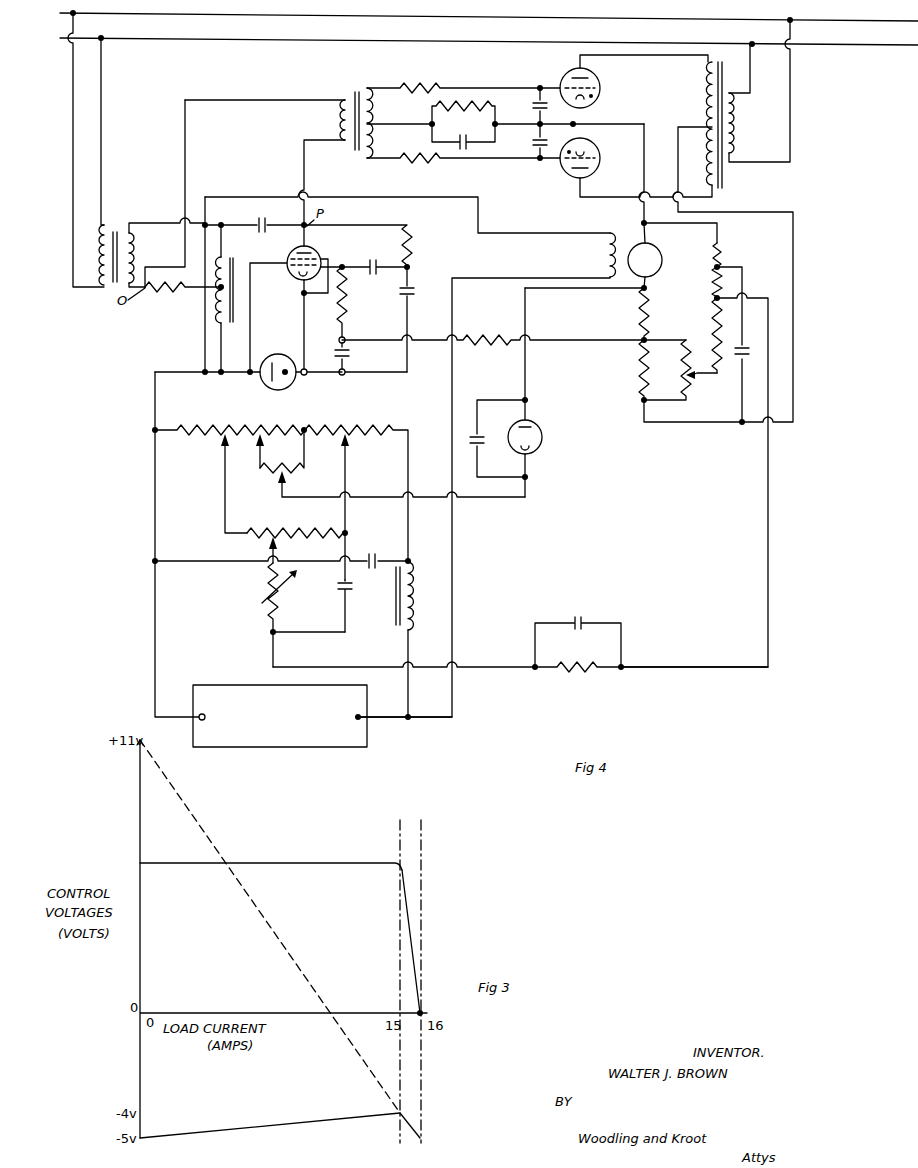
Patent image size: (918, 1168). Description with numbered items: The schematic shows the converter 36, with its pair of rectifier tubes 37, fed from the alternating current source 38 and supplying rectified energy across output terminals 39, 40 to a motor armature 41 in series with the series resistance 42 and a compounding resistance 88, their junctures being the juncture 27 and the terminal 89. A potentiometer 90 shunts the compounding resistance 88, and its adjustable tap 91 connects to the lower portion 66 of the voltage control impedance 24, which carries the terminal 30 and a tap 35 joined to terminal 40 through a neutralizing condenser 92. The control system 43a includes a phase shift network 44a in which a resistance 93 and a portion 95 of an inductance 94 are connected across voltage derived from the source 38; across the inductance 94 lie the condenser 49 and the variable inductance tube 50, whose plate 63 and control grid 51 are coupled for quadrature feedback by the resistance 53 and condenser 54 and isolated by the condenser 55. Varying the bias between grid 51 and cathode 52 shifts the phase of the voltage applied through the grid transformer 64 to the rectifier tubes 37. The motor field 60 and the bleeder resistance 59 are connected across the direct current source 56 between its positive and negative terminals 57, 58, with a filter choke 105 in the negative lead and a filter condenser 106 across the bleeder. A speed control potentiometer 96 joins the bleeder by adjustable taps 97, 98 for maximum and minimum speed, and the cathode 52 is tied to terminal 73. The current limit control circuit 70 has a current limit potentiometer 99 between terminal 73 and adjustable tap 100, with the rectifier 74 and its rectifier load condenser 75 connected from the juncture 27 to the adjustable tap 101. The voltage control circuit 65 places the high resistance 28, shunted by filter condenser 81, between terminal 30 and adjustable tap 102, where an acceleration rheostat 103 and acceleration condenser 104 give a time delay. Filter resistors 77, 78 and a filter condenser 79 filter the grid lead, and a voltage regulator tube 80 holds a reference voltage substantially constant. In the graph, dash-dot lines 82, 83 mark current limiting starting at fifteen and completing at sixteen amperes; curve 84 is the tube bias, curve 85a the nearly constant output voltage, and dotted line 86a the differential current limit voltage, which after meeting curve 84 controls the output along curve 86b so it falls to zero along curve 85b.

In FIG. 4, the alternating current source 38 is at (153, 15).
In FIG. 4, the grid transformer 64 is at (345, 96).
In FIG. 4, the converter 36 is at (663, 93).
In FIG. 4, the rectifier tubes 37 is at (587, 102).
In FIG. 4, the inductance 94 is at (200, 321).
In FIG. 4, the resistance 93 is at (172, 291).
In FIG. 4, the portion of inductance 95 is at (218, 274).
In FIG. 4, the condenser 49 is at (259, 223).
In FIG. 4, the phase shift network 44a is at (286, 298).
In FIG. 4, the plate 63 is at (309, 252).
In FIG. 4, the control grid 51 is at (291, 270).
In FIG. 4, the cathode 52 is at (299, 281).
In FIG. 4, the variable inductance tube 50 is at (321, 263).
In FIG. 4, the condenser 55 is at (382, 261).
In FIG. 4, the resistance 53 is at (412, 251).
In FIG. 4, the condenser 54 is at (412, 295).
In FIG. 4, the second filter resistor 78 is at (347, 300).
In FIG. 4, the filter condenser 79 is at (350, 353).
In FIG. 4, the first filter resistor 77 is at (487, 337).
In FIG. 4, the voltage regulator tube 80 is at (280, 351).
In FIG. 4, the motor field 60 is at (605, 258).
In FIG. 4, the output terminal 39 is at (643, 222).
In FIG. 4, the motor armature 41 is at (662, 259).
In FIG. 4, the juncture 27 is at (650, 289).
In FIG. 4, the series resistance 42 is at (640, 318).
In FIG. 4, the terminal 89 is at (651, 340).
In FIG. 4, the compounding resistance 88 is at (640, 378).
In FIG. 4, the potentiometer 90 is at (684, 385).
In FIG. 4, the adjustable tap 91 is at (700, 376).
In FIG. 4, the output terminal 40 is at (740, 426).
In FIG. 4, the voltage control impedance 24 is at (721, 257).
In FIG. 4, the tap 35 is at (715, 267).
In FIG. 4, the terminal 30 is at (721, 283).
In FIG. 4, the lower portion of voltage control impedance 66 is at (714, 326).
In FIG. 4, the neutralizing condenser 92 is at (746, 348).
In FIG. 4, the positive terminal 57 is at (151, 432).
In FIG. 4, the control system 43a is at (383, 413).
In FIG. 4, the bleeder resistance 59 is at (252, 428).
In FIG. 4, the terminal 73 is at (307, 427).
In FIG. 4, the adjustable tap 97 is at (221, 448).
In FIG. 4, the speed control potentiometer 96 is at (275, 528).
In FIG. 4, the adjustable tap 98 is at (351, 448).
In FIG. 4, the adjustable tap 100 is at (263, 449).
In FIG. 4, the current limit potentiometer 99 is at (293, 472).
In FIG. 4, the adjustable tap 101 is at (278, 486).
In FIG. 4, the adjustable tap 102 is at (268, 548).
In FIG. 4, the acceleration rheostat 103 is at (262, 590).
In FIG. 4, the acceleration condenser 104 is at (340, 592).
In FIG. 4, the filter condenser 106 is at (371, 557).
In FIG. 4, the filter choke 105 is at (410, 606).
In FIG. 4, the negative terminal 58 is at (409, 720).
In FIG. 4, the high resistance 28 is at (572, 672).
In FIG. 4, the filter condenser 81 is at (585, 620).
In FIG. 4, the voltage control circuit 65 is at (660, 663).
In FIG. 4, the direct current source 56 is at (343, 747).
In FIG. 4, the rectifier load condenser 75 is at (478, 437).
In FIG. 4, the rectifier 74 is at (542, 436).
In FIG. 4, the current limit control circuit 70 is at (560, 478).
In FIG. 3, the dash-dot line 82 is at (399, 950).
In FIG. 3, the dash-dot line 83 is at (423, 942).
In FIG. 3, the curve 84 is at (270, 1121).
In FIG. 3, the curve 85a is at (271, 858).
In FIG. 3, the curve 85b is at (411, 911).
In FIG. 3, the dotted line 86a is at (273, 932).
In FIG. 3, the curve 86b is at (414, 1130).